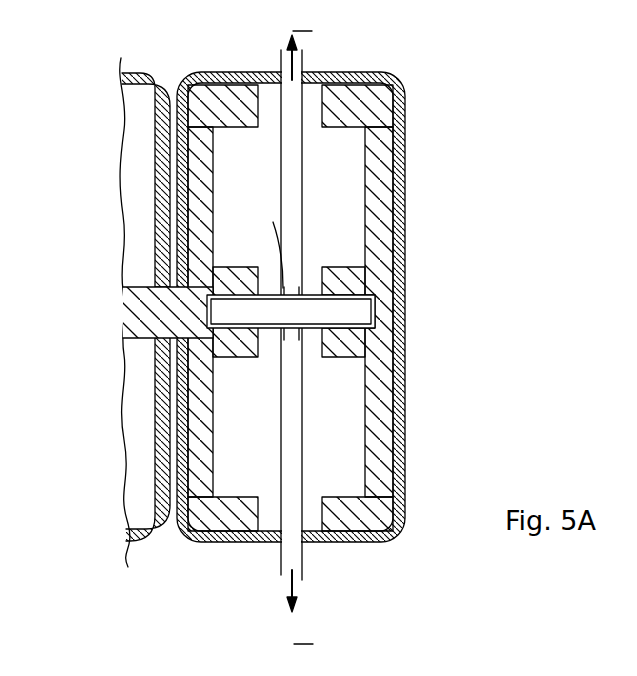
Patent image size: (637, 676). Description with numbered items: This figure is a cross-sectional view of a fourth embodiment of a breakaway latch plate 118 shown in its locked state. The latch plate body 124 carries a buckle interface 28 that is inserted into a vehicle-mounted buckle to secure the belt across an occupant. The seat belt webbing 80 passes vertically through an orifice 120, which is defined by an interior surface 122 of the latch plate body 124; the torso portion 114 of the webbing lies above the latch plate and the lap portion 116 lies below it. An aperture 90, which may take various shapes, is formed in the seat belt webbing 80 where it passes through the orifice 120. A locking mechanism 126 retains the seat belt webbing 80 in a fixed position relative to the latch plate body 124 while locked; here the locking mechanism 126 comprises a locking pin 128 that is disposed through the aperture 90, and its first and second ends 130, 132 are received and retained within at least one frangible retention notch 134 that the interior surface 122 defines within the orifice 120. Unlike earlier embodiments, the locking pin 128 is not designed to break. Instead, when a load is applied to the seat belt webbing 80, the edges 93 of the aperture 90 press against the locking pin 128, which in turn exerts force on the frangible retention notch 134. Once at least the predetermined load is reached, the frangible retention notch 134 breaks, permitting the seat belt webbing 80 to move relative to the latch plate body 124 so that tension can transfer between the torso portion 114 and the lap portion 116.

The buckle interface 28 is at (146, 320).
The seat belt webbing 80 is at (292, 184).
The aperture 90 is at (298, 290).
The edges of the aperture 93 is at (283, 295).
The torso portion 114 is at (282, 64).
The lap portion 116 is at (304, 580).
The breakaway latch plate 118 is at (440, 150).
The orifice 120 is at (350, 225).
The interior surface 122 is at (393, 428).
The latch plate body 124 is at (394, 265).
The locking mechanism 126 is at (181, 205).
The locking pin 128 is at (395, 360).
The first end of the locking pin 130 is at (209, 309).
The second end of the locking pin 132 is at (356, 316).
The frangible retention notch 134 is at (181, 287).